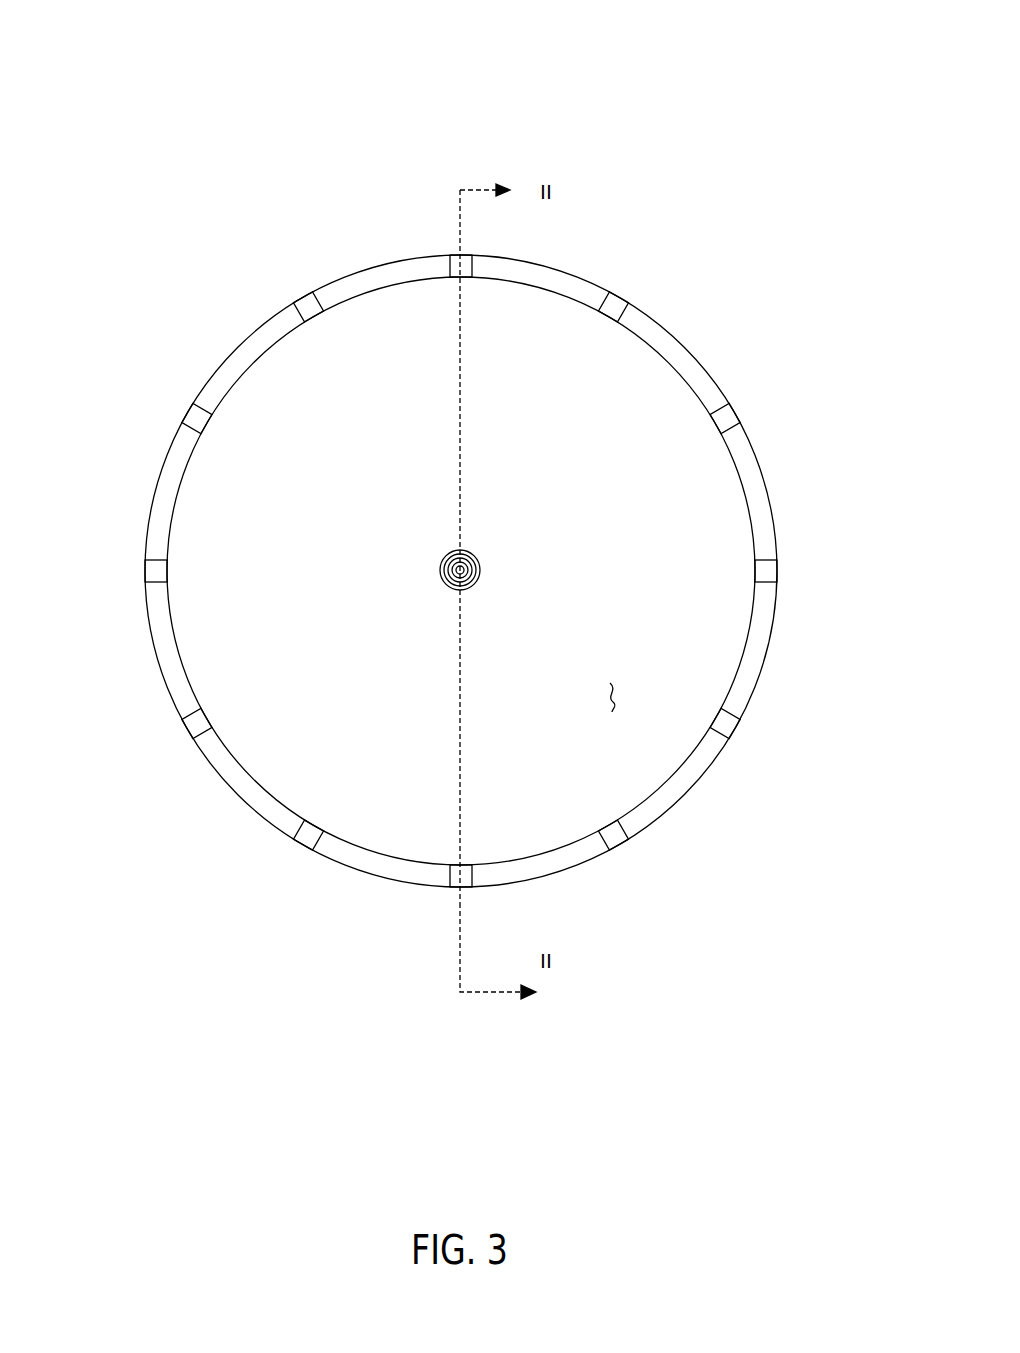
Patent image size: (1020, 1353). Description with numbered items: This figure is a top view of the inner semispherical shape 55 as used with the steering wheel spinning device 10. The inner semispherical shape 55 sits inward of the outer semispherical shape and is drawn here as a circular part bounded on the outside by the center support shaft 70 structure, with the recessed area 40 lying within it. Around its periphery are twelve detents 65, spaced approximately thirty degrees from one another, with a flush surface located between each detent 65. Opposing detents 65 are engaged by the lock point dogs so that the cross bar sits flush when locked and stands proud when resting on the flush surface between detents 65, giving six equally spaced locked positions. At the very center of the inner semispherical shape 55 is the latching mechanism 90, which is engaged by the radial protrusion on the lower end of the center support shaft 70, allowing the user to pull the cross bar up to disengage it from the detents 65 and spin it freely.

The steering wheel spinning device 10 is at (155, 137).
The recessed area 40 is at (617, 697).
The inner semispherical shape 55 is at (745, 490).
The detents 65 is at (615, 292).
The center support shaft 70 is at (777, 532).
The latching mechanism 90 is at (463, 568).